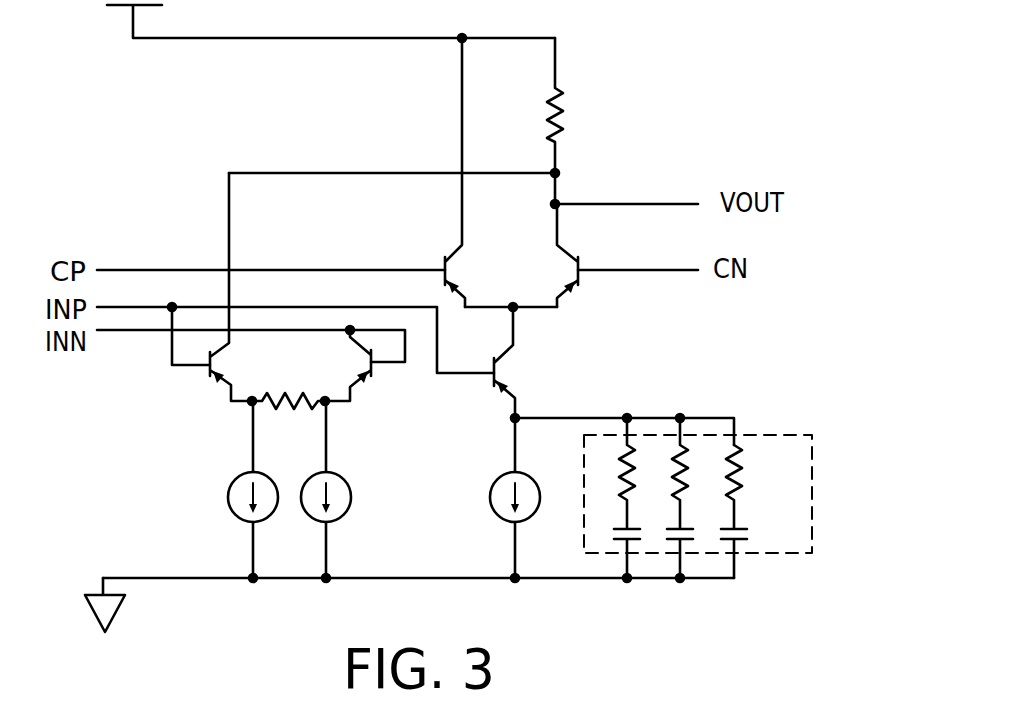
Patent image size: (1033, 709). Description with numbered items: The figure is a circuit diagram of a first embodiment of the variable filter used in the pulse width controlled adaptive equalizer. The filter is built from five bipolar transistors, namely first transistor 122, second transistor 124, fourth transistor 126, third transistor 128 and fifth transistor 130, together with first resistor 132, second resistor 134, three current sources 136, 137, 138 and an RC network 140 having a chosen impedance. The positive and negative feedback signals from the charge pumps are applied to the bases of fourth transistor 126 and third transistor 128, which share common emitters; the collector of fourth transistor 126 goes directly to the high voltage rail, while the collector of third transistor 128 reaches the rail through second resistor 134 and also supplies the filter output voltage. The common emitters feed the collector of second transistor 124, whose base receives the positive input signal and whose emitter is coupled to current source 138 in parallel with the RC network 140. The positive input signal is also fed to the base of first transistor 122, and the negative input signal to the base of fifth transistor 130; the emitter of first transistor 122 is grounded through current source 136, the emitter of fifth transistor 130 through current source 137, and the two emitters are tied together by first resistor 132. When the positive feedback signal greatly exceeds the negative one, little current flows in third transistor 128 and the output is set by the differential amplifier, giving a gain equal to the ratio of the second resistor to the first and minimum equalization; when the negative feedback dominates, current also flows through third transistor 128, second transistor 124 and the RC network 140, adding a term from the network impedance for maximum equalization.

The bipolar transistor Q1 122 is at (220, 378).
The bipolar transistor Q2 124 is at (513, 340).
The bipolar transistor Q4 126 is at (455, 250).
The bipolar transistor Q3 128 is at (563, 248).
The bipolar transistor Q5 130 is at (365, 378).
The resistor R1 132 is at (312, 408).
The resistor R2 134 is at (565, 90).
The current source 136 is at (228, 500).
The current source 137 is at (351, 505).
The current source 138 is at (500, 517).
The RC network 140 is at (785, 435).